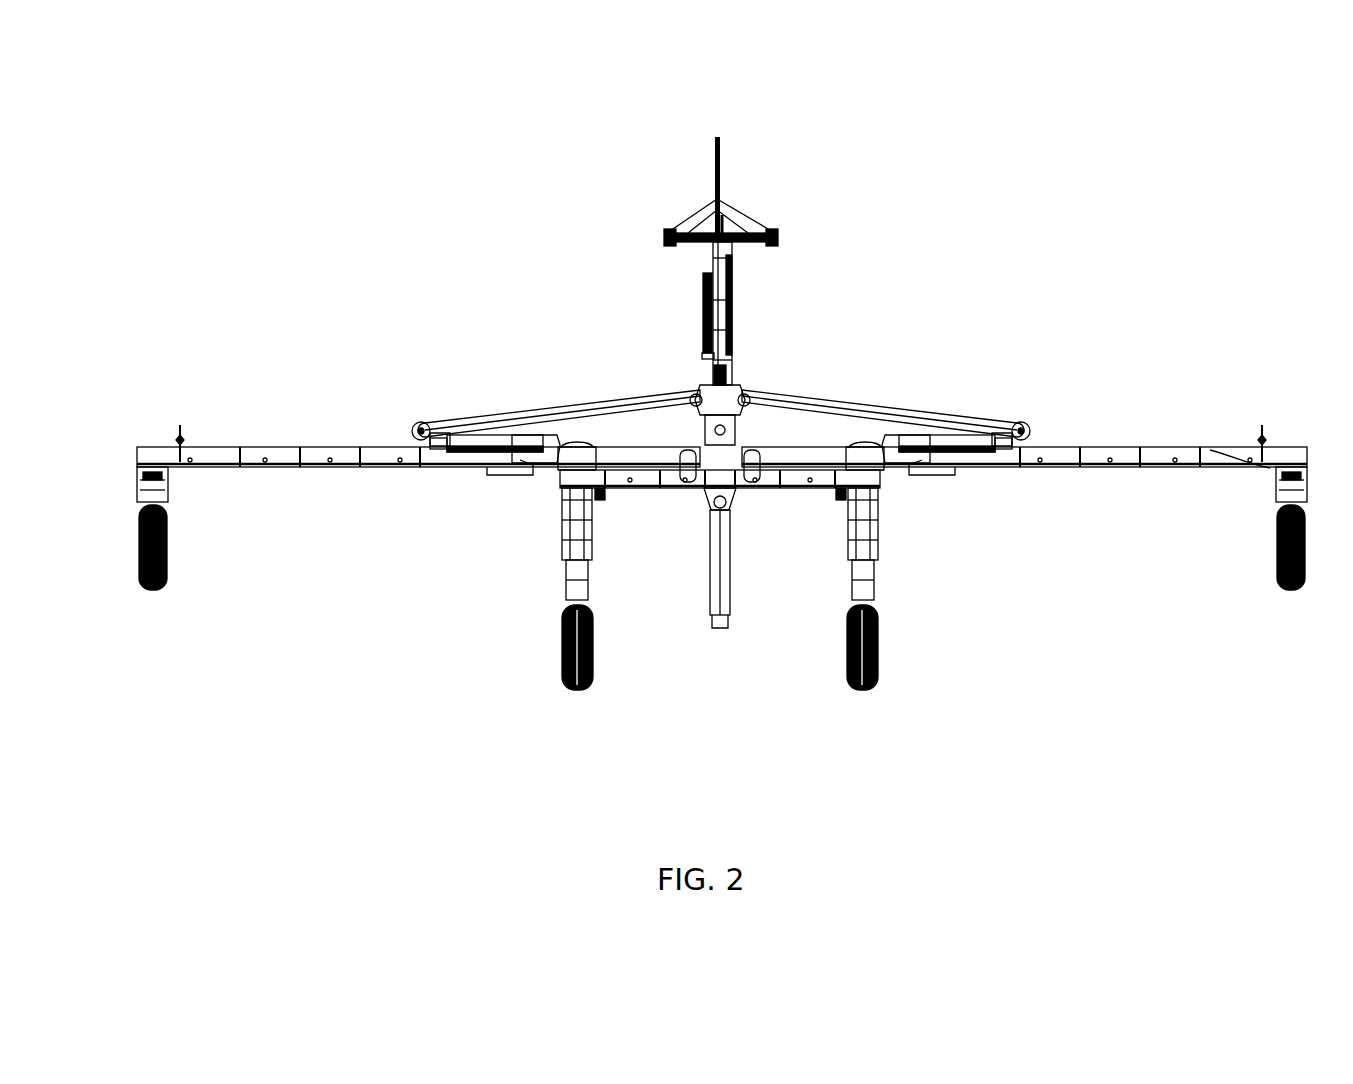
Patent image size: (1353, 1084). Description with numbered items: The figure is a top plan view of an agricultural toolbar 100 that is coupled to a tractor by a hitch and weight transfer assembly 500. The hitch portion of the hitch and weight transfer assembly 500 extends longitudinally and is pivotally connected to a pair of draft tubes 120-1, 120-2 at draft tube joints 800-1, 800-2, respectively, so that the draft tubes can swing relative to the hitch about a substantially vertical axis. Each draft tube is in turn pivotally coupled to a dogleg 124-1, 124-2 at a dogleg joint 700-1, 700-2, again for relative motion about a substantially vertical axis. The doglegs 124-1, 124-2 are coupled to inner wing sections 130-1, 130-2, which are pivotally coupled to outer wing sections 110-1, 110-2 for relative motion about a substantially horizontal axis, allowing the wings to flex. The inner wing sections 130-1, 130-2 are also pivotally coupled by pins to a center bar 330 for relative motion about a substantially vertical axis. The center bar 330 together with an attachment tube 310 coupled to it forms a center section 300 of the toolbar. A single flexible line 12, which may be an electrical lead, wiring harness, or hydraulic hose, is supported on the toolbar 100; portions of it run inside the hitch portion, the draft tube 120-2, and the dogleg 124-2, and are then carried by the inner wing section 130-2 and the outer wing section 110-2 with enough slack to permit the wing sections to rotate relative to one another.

The agricultural toolbar 100 is at (398, 862).
The line 12 is at (715, 165).
The hitch and weight transfer assembly 500 is at (771, 179).
The draft tube joint 800-1 is at (686, 383).
The draft tube joint 800-2 is at (750, 383).
The draft tube 120-1 is at (586, 403).
The draft tube 120-2 is at (900, 410).
The dogleg 124-1 is at (480, 433).
The dogleg 124-2 is at (950, 433).
The dogleg joint 700-1 is at (393, 432).
The dogleg joint 700-2 is at (1056, 432).
The outer wing section 110-1 is at (288, 468).
The outer wing section 110-2 is at (1157, 470).
The inner wing section 130-1 is at (584, 449).
The inner wing section 130-2 is at (847, 449).
The center bar 330 is at (614, 491).
The attachment tube 310 is at (731, 567).
The center section 300 is at (717, 672).